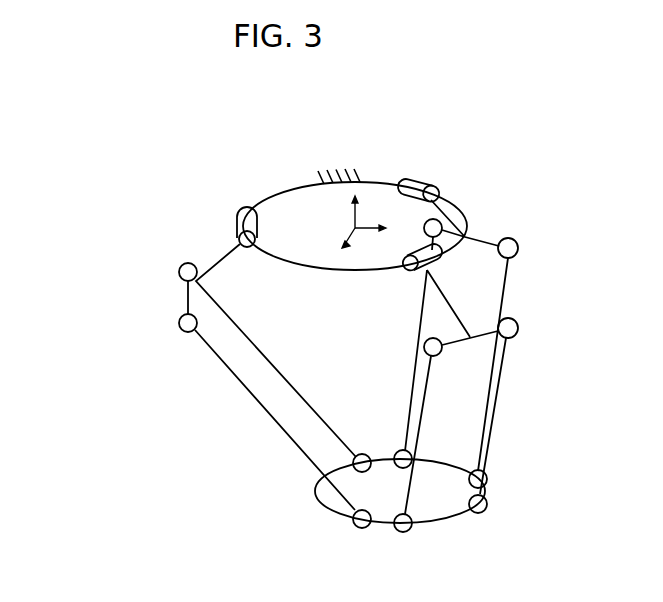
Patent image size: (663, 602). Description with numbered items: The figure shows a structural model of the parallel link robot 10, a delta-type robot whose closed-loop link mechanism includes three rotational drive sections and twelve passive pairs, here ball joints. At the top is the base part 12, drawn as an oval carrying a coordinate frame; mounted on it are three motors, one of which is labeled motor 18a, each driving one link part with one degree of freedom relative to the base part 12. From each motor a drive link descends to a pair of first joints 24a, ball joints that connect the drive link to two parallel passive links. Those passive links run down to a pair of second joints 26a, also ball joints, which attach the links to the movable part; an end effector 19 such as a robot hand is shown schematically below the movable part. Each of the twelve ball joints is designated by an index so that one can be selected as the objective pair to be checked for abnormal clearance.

The parallel link robot 10 is at (507, 157).
The base part 12 is at (295, 188).
The motor 18a is at (236, 222).
The movable platform 19 is at (385, 522).
The first joints 24a is at (178, 323).
The second joints 26a is at (353, 520).